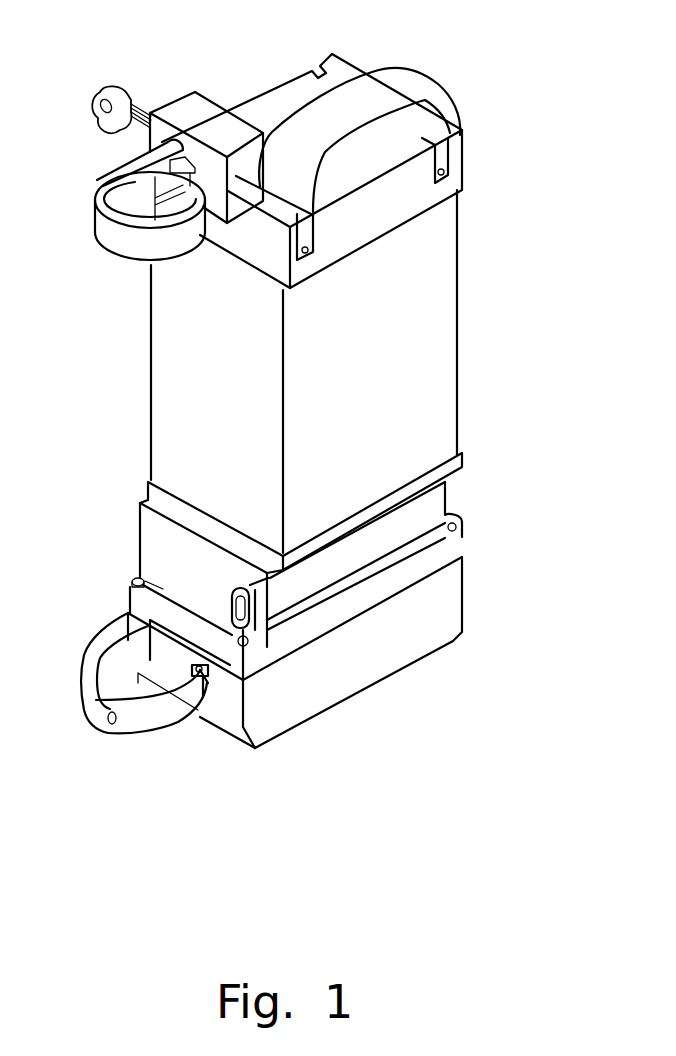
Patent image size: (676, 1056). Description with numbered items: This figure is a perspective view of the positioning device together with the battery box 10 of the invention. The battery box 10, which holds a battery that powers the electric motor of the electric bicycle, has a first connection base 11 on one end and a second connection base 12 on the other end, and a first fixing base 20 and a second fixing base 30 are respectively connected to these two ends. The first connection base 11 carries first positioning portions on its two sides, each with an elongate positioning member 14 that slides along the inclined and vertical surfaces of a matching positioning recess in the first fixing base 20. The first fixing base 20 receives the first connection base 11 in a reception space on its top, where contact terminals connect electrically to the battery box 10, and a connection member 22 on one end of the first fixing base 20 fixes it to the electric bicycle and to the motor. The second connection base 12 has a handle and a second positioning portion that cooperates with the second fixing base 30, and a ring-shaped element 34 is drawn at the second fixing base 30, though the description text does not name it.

The battery box 10 is at (440, 377).
The first connection base 11 is at (430, 507).
The second connection base 12 is at (283, 100).
The positioning member 14 is at (253, 607).
The first fixing base 20 is at (375, 660).
The connection member 22 is at (163, 722).
The second fixing base 30 is at (177, 110).
The ring clamp 34 is at (130, 247).